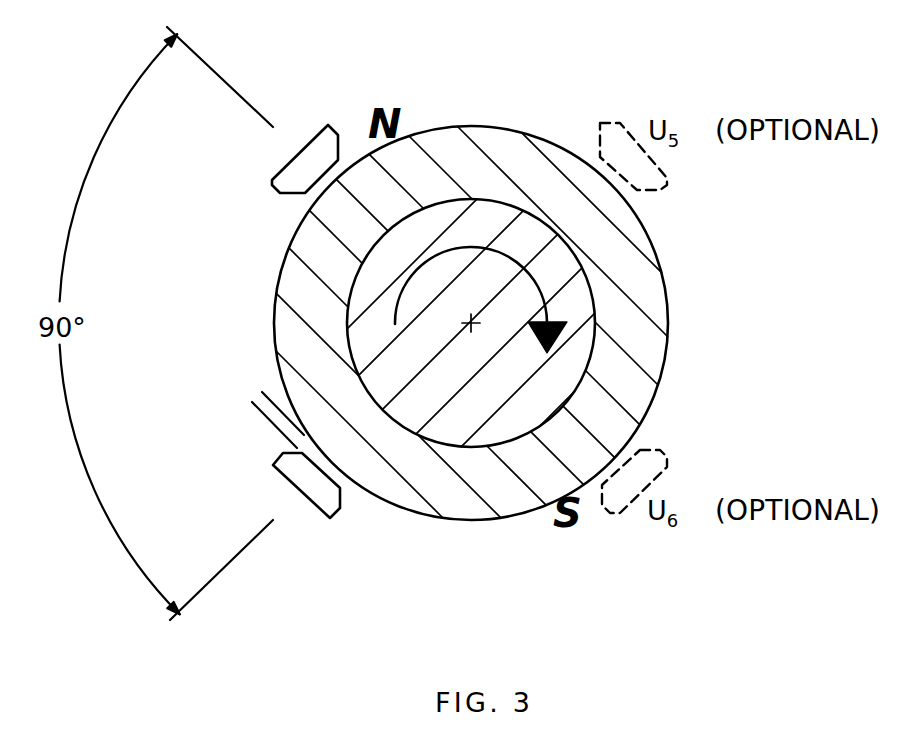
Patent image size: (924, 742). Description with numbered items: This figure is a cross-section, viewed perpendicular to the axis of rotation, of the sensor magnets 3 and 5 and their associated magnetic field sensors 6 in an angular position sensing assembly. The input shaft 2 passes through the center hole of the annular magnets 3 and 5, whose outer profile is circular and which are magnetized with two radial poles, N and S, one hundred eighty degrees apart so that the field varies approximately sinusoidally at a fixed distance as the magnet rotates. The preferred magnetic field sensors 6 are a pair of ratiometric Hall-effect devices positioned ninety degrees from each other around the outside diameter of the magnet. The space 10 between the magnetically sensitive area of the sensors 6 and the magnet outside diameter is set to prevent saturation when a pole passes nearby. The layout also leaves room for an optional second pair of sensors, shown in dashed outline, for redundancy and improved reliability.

The input shaft 2 is at (548, 291).
The sensor magnet 3 is at (471, 373).
The sensor magnet 5 is at (472, 374).
The magnetic field sensor 6 is at (333, 360).
The space 10 is at (236, 424).